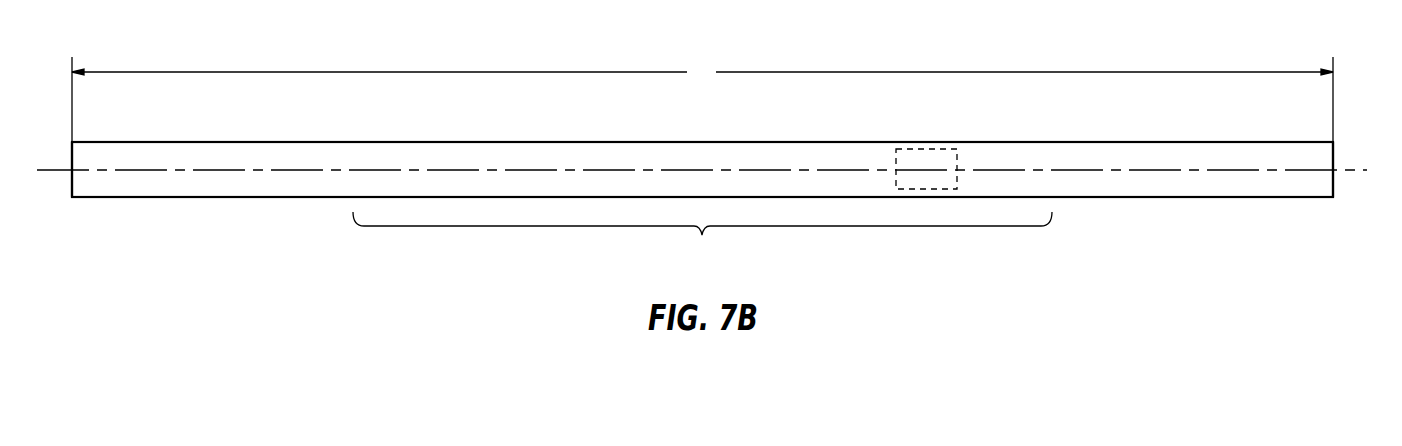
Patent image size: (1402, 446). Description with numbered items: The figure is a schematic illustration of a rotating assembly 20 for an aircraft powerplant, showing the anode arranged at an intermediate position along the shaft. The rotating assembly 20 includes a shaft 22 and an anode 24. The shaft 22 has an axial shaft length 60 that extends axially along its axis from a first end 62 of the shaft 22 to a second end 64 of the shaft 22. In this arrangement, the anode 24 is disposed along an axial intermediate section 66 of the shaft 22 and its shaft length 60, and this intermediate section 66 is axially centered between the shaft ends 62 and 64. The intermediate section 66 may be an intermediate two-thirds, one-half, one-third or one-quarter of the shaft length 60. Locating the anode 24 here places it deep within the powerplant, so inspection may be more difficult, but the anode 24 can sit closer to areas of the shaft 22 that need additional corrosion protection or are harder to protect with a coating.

The rotating assembly 20 is at (84, 238).
The shaft 22 is at (782, 142).
The anode 24 is at (928, 150).
The axial shaft length 60 is at (702, 99).
The first end 62 is at (72, 151).
The second end 64 is at (1333, 152).
The axial intermediate section 66 is at (702, 239).